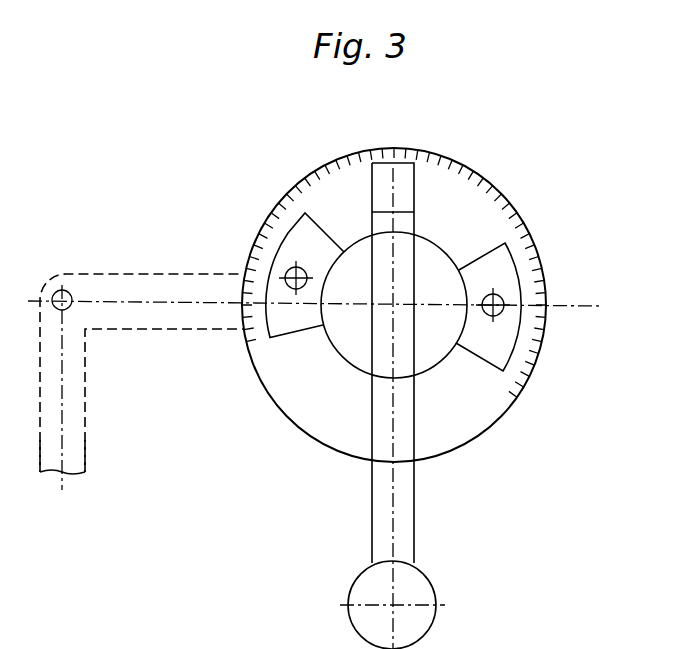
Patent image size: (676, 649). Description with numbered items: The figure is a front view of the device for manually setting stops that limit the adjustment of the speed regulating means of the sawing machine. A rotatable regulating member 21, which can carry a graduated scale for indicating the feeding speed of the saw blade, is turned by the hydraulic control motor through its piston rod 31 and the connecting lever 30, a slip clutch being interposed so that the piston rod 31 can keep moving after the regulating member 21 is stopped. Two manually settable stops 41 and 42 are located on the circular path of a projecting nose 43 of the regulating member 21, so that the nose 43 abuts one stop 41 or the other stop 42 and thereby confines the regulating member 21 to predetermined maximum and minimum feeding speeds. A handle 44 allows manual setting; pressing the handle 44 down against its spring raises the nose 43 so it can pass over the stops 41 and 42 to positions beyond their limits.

The regulating member 21 is at (428, 263).
The lever 30 is at (108, 282).
The piston rod 31 is at (80, 448).
The manually settable stop 41 is at (502, 275).
The manually settable stop 42 is at (297, 238).
The projecting nose 43 is at (408, 192).
The handle 44 is at (380, 493).